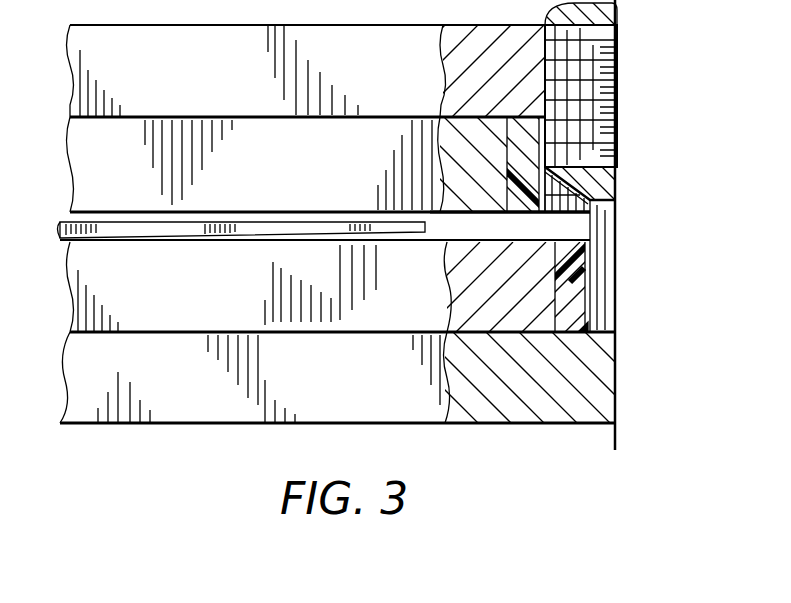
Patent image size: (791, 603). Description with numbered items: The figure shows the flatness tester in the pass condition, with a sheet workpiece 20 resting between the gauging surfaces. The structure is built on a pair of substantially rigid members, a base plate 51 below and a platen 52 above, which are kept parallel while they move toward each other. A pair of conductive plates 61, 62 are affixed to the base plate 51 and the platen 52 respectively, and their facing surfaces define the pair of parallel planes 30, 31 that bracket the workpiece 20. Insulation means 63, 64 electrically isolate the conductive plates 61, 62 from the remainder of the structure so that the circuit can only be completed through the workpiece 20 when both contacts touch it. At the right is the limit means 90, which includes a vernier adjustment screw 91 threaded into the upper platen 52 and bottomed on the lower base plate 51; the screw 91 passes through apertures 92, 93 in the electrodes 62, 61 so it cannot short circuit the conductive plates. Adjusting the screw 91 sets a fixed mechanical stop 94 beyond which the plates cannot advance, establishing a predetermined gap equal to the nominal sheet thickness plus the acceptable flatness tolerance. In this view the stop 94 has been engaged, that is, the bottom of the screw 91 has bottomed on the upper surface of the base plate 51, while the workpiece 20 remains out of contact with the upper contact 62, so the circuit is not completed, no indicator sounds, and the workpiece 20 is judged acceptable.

The workpiece 20 is at (330, 222).
The parallel plane 30 is at (506, 235).
The parallel plane 31 is at (495, 218).
The base plate 51 is at (197, 403).
The platen 52 is at (306, 71).
The conductive plate 61 is at (210, 298).
The conductive plate 62 is at (292, 176).
The insulation means 63 is at (388, 333).
The insulation means 64 is at (432, 117).
The limit means 90 is at (605, 296).
The vernier adjustment screw 91 is at (607, 152).
The aperture 92 is at (560, 195).
The aperture 93 is at (573, 255).
The mechanical stop 94 is at (598, 332).